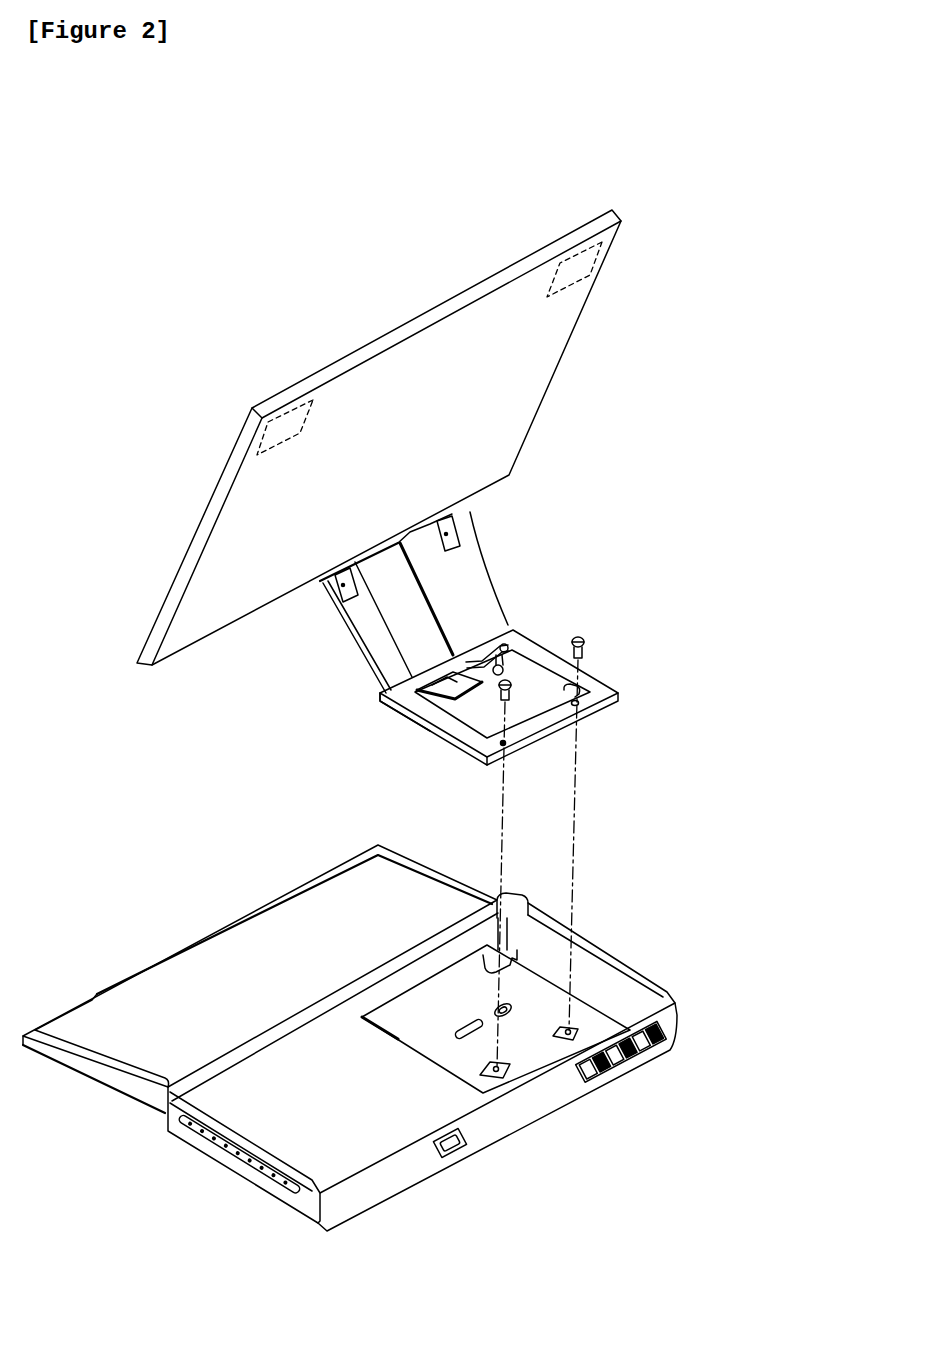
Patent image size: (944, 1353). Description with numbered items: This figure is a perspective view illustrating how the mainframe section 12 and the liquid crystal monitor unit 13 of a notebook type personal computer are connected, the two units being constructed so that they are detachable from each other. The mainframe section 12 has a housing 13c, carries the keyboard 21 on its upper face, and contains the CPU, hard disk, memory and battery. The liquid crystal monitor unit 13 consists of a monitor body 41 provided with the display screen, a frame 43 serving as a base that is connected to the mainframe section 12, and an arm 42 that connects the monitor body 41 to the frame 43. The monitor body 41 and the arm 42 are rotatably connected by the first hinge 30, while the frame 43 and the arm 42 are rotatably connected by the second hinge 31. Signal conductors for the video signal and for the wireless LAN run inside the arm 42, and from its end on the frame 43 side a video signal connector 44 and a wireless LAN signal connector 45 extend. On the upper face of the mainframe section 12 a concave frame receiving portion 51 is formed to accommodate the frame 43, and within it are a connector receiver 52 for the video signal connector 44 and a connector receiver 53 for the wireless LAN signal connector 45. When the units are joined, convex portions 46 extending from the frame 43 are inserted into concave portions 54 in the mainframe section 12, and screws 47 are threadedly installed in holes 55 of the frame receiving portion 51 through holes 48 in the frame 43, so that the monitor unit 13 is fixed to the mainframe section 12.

The mainframe section 12 is at (676, 903).
The liquid crystal monitor unit 13 is at (202, 437).
The housing of base unit 13c is at (342, 1152).
The keyboard 21 is at (147, 1000).
The first hinge 30 is at (318, 583).
The second hinge 31 is at (380, 694).
The monitor body 41 is at (547, 358).
The arm 42 is at (472, 551).
The frame 43 is at (534, 648).
The video signal connector 44 is at (443, 696).
The wireless LAN signal connector 45 is at (501, 663).
The convex portions 46 is at (360, 684).
The screws 47 is at (493, 697).
The holes 48 is at (588, 708).
The frame receiving portion 51 is at (533, 1050).
The connector receiver 52 is at (450, 1027).
The connector receiver 53 is at (508, 1004).
The concave portions 54 is at (512, 900).
The holes 55 is at (572, 1028).